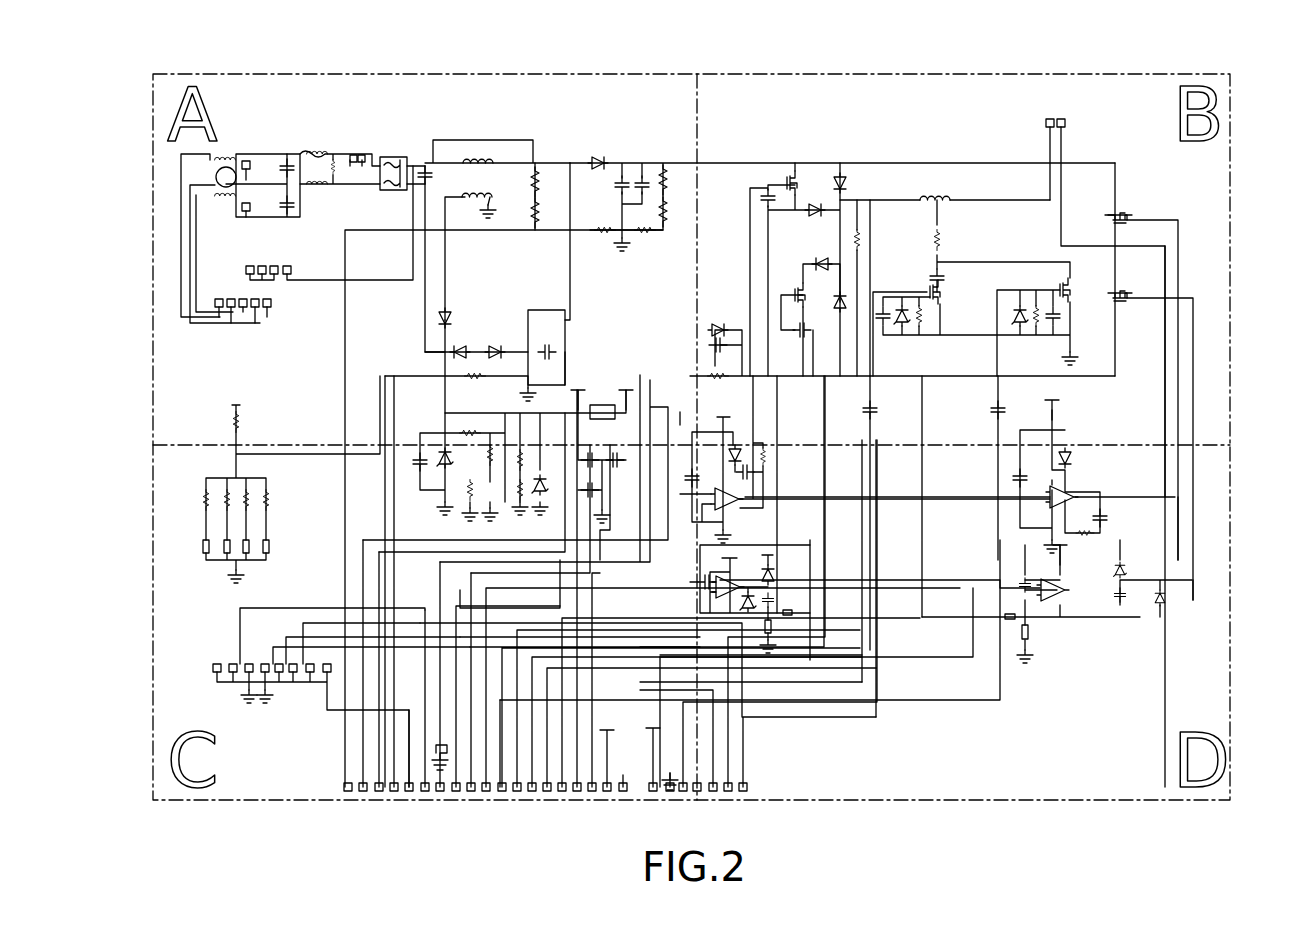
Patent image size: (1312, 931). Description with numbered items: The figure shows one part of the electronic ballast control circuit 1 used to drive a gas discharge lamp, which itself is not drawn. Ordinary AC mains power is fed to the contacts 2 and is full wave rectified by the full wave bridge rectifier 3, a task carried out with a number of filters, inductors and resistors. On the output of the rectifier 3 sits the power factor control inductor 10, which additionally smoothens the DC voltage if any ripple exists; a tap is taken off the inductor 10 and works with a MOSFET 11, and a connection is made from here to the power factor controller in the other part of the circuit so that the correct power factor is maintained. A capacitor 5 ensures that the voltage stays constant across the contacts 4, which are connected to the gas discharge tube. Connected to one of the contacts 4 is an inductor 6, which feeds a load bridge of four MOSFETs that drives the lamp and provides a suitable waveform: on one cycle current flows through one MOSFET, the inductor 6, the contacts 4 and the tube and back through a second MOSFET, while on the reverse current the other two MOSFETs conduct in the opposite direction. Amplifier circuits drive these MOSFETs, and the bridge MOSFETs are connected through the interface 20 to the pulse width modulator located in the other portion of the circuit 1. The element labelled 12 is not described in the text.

The electronic ballast control circuit 1 is at (996, 73).
The contacts 2 is at (222, 325).
The full wave bridge rectifier 3 is at (284, 152).
The contacts 4 is at (1063, 117).
The capacitor 5 is at (630, 186).
The inductor 6 is at (930, 198).
The power factor control inductor 10 is at (489, 177).
The MOSFET 11 is at (568, 318).
The detection circuit 12 is at (728, 376).
The interface 20 is at (749, 786).